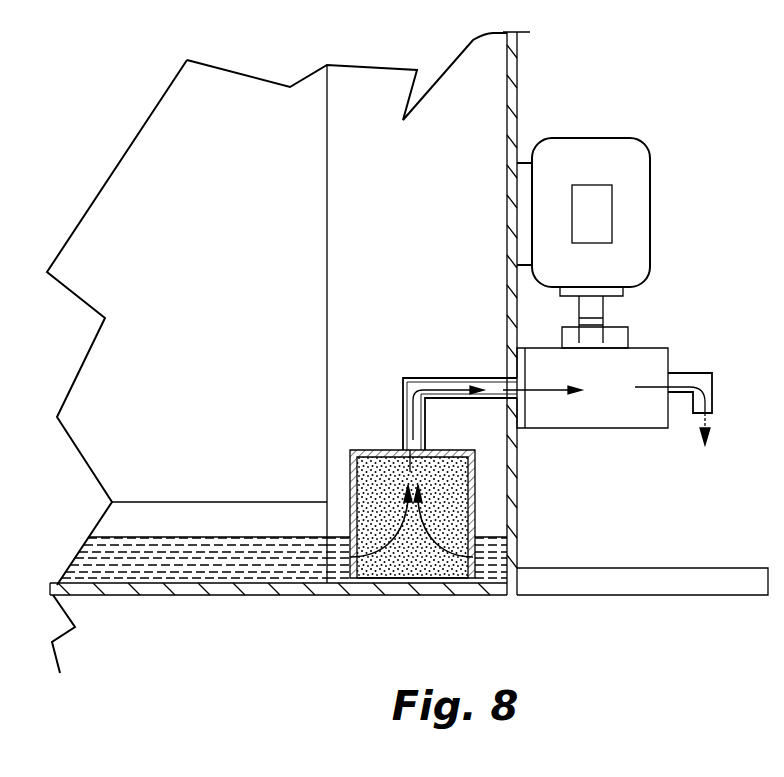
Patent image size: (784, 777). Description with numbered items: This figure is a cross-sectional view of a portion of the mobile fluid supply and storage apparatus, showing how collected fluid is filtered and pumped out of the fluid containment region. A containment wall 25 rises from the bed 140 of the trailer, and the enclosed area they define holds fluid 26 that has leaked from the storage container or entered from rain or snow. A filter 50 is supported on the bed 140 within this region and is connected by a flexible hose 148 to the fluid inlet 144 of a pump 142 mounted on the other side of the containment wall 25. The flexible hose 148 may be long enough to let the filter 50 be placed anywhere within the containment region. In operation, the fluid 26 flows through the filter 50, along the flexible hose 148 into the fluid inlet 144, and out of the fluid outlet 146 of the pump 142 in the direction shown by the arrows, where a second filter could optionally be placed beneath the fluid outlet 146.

The containment wall 25 is at (513, 115).
The fluid 26 is at (133, 537).
The filter 50 is at (475, 495).
The bed 140 is at (158, 595).
The pump 142 is at (643, 242).
The fluid inlet 144 is at (513, 362).
The fluid outlet 146 is at (712, 412).
The flexible hose 148 is at (405, 380).